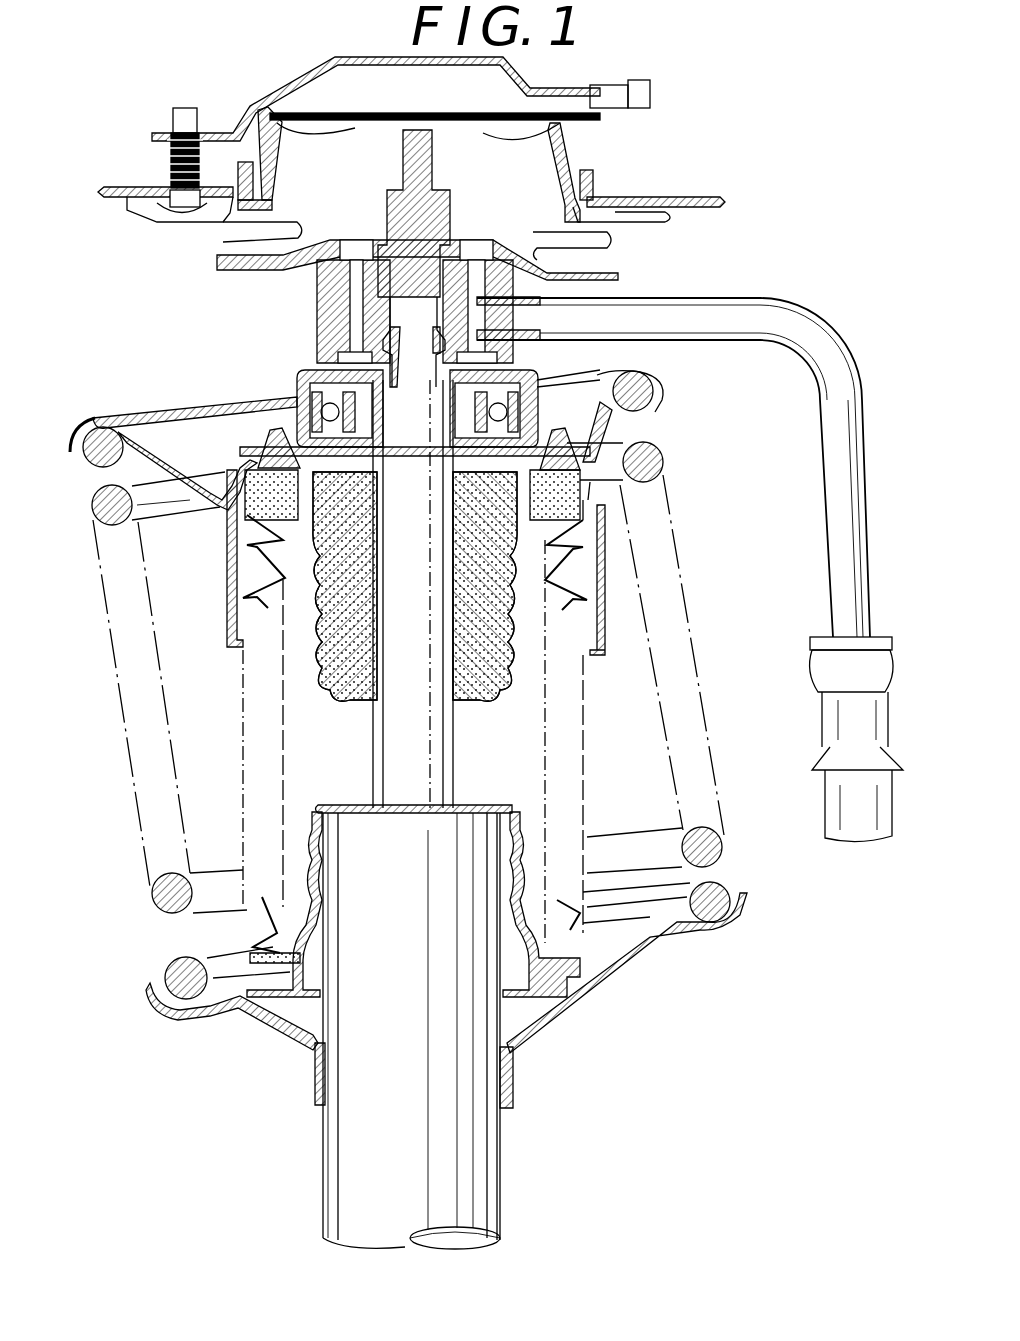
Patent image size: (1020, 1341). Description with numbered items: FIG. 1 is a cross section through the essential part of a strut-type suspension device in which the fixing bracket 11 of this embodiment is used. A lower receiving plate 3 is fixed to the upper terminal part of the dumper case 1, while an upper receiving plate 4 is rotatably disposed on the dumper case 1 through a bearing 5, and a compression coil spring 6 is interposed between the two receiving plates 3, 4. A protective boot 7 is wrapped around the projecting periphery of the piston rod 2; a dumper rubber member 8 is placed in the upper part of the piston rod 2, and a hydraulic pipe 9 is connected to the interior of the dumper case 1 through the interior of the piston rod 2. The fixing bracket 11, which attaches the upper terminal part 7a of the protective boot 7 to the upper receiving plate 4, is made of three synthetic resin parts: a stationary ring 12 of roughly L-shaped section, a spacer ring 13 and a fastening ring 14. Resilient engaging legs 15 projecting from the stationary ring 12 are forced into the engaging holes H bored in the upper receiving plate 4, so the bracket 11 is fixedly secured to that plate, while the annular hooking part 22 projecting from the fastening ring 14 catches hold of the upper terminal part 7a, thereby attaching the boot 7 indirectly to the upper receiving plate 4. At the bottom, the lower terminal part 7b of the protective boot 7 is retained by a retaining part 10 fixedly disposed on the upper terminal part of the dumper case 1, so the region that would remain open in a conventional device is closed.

The dumper case 1 is at (467, 1137).
The piston rod 2 is at (422, 748).
The lower receiving plate 3 is at (630, 943).
The upper receiving plate 4 is at (170, 425).
The bearing 5 is at (300, 395).
The compression coil spring 6 is at (650, 460).
The protective boot 7 is at (267, 607).
The upper terminal part of the protective boot 7a is at (247, 530).
The lower terminal part of the protective boot 7b is at (573, 990).
The dumper rubber member 8 is at (338, 690).
The hydraulic pipe 9 is at (852, 481).
The retaining part 10 is at (287, 917).
The fixing bracket 11 is at (569, 441).
The stationary ring 12 is at (588, 480).
The spacer ring 13 is at (590, 494).
The fastening ring 14 is at (583, 503).
The resilient engaging legs 15 is at (272, 432).
The annular hooking part 22 is at (237, 515).
The engaging holes H is at (247, 460).